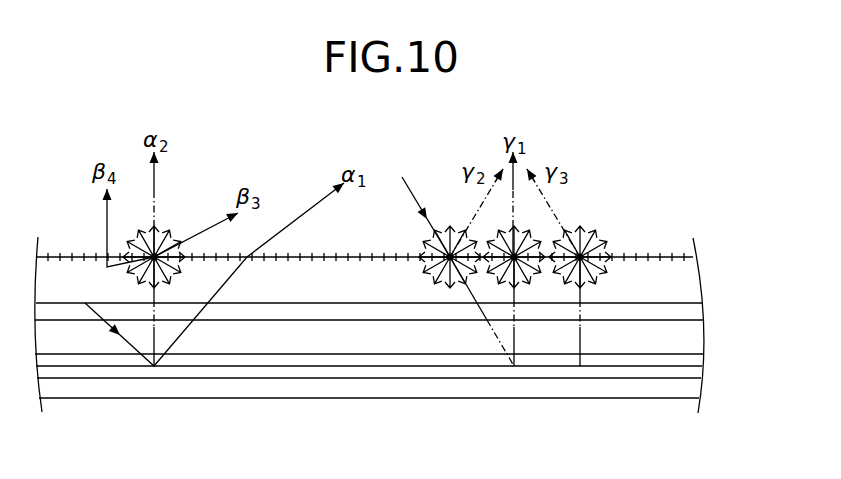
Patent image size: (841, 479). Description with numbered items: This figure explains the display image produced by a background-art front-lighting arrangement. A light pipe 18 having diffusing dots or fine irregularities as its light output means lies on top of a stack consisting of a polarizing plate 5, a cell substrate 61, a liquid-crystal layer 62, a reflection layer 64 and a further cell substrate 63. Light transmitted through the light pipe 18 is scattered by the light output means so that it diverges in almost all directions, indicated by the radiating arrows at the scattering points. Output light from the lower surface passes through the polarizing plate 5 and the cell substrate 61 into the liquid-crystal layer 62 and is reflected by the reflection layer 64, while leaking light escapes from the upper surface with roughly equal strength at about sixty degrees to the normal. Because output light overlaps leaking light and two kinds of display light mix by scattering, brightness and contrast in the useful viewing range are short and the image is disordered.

The light pipe 18 is at (683, 278).
The polarizing plate 5 is at (683, 312).
The cell substrate 61 is at (683, 336).
The liquid-crystal layer 62 is at (685, 360).
The reflection layer 64 is at (685, 373).
The cell substrate 63 is at (685, 392).